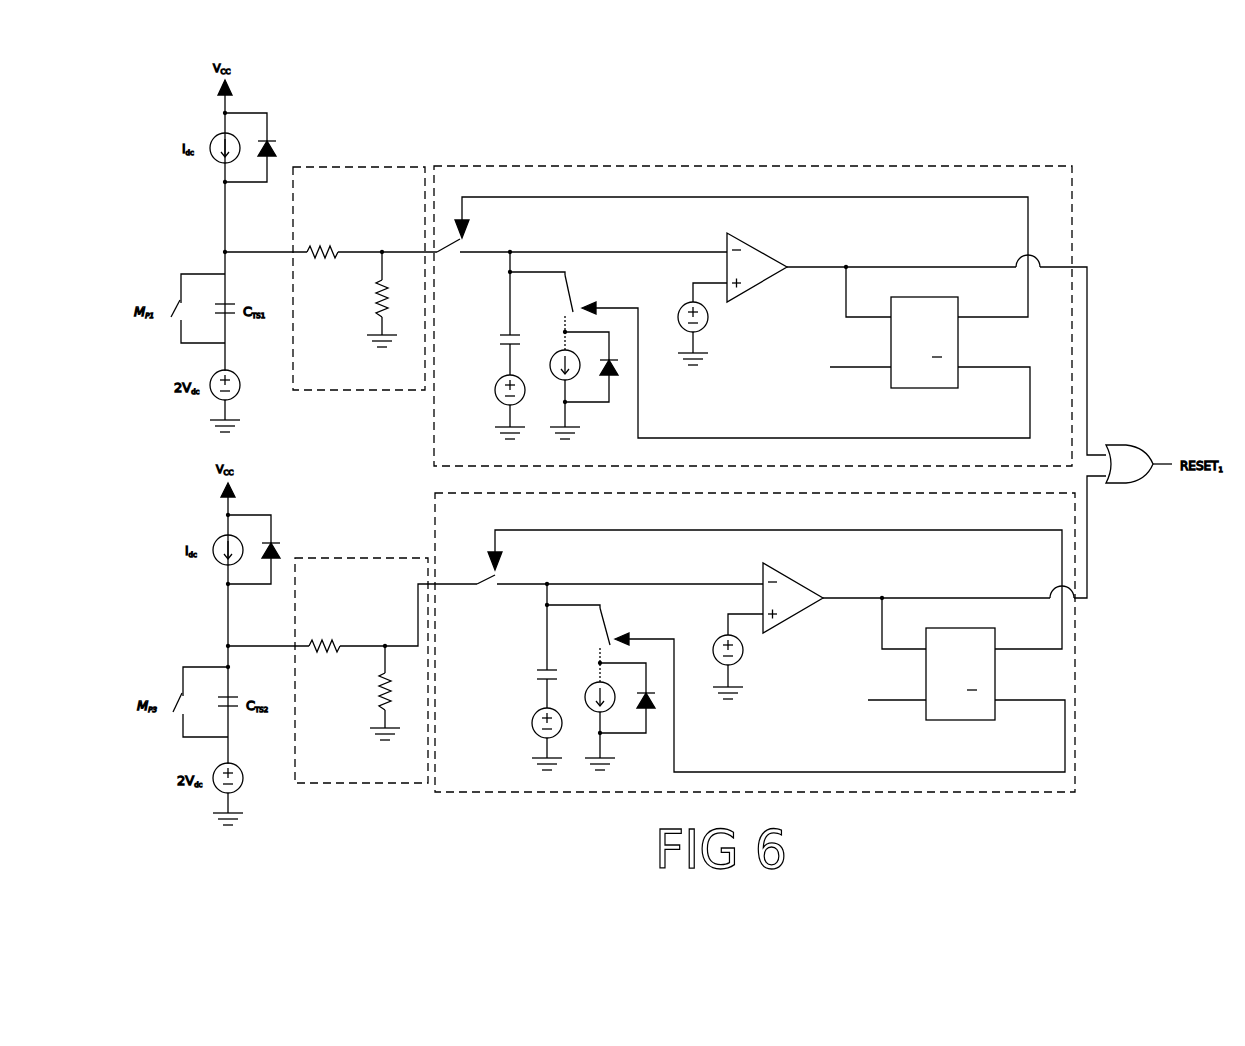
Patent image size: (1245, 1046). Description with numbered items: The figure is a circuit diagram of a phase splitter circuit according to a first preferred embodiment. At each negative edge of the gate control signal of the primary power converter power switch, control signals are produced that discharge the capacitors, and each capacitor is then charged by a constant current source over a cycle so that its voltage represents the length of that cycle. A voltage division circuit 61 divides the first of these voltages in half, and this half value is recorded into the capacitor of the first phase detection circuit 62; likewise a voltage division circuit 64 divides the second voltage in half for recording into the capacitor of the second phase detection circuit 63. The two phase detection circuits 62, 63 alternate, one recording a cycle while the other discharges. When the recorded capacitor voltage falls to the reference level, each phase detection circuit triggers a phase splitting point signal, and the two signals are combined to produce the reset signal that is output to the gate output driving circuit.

The voltage division circuit 61 is at (326, 375).
The first phase detection circuit 62 is at (1052, 217).
The second phase detection circuit 63 is at (1061, 672).
The voltage division circuit 64 is at (333, 770).